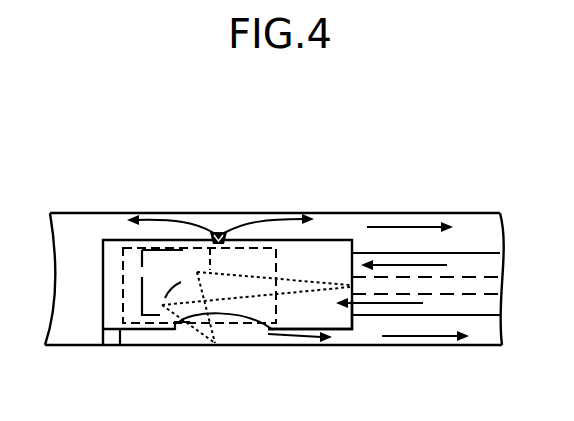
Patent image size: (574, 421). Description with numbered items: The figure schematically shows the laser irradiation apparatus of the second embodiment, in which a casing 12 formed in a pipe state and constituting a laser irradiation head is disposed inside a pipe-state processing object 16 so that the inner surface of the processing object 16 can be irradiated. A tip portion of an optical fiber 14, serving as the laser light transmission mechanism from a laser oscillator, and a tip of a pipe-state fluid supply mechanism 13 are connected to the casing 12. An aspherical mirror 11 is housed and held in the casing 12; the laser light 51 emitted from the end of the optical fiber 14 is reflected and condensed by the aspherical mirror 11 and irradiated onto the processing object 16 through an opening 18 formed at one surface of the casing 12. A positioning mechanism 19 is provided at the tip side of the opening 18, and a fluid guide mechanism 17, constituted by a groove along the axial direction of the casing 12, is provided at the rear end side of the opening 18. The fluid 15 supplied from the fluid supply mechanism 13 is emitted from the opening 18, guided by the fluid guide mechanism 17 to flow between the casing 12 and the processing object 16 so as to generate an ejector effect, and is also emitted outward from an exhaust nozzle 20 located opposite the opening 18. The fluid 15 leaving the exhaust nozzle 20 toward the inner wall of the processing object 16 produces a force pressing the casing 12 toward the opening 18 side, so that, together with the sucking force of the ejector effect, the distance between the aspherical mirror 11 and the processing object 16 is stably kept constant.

The aspherical mirror 11 is at (153, 268).
The casing 12 is at (342, 240).
The fluid supply mechanism 13 is at (425, 260).
The optical fiber 14 is at (384, 283).
The fluid 15 is at (178, 220).
The processing object 16 is at (68, 346).
The fluid guide mechanism 17 is at (338, 329).
The opening 18 is at (186, 323).
The positioning mechanism 19 is at (112, 340).
The exhaust nozzle 20 is at (218, 232).
The laser light 51 is at (300, 280).